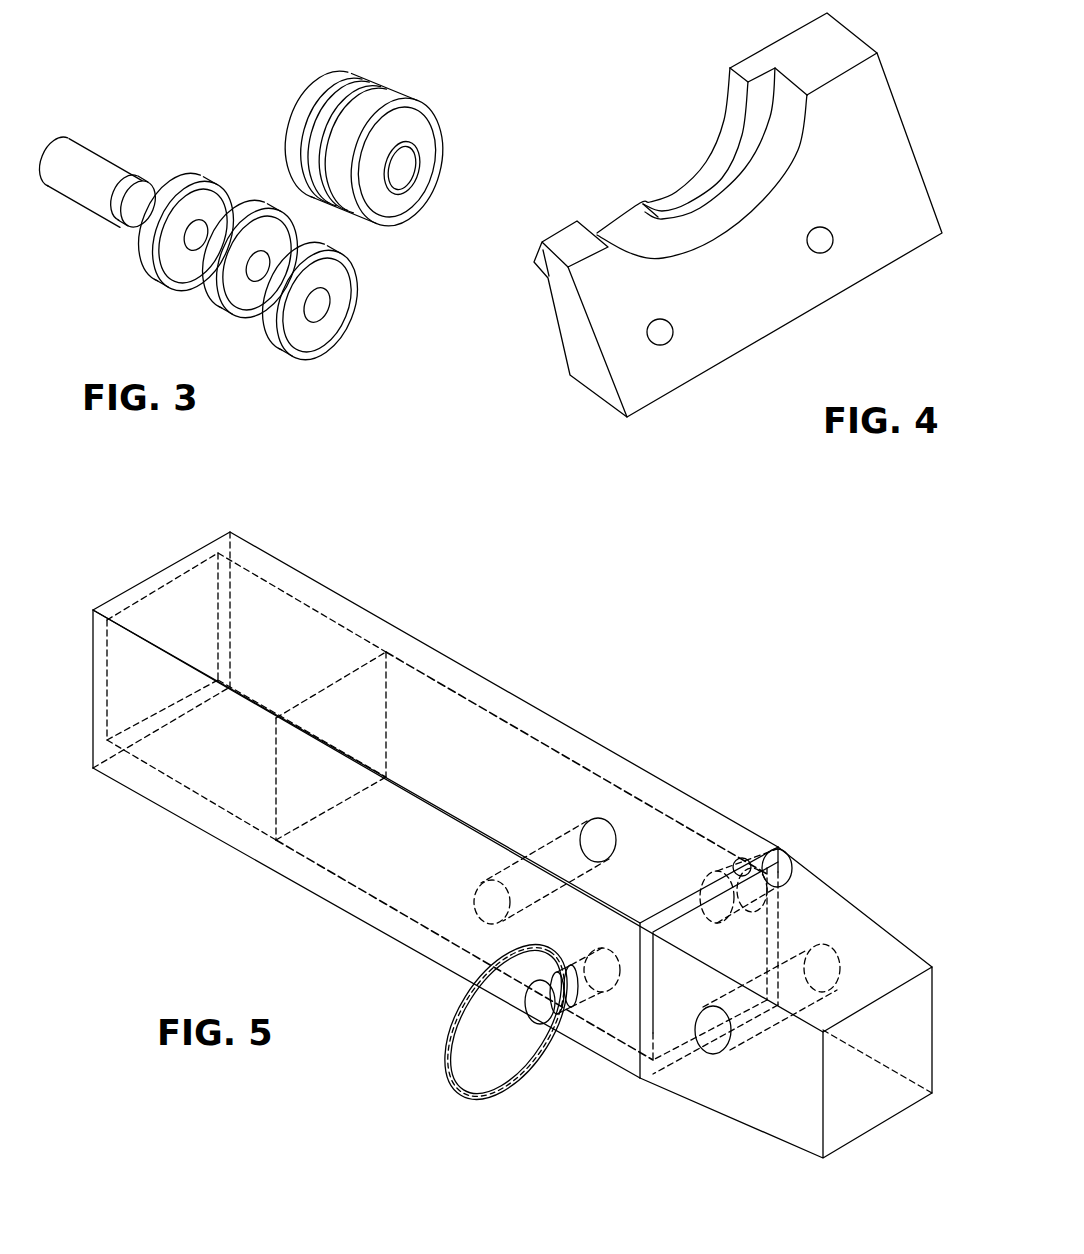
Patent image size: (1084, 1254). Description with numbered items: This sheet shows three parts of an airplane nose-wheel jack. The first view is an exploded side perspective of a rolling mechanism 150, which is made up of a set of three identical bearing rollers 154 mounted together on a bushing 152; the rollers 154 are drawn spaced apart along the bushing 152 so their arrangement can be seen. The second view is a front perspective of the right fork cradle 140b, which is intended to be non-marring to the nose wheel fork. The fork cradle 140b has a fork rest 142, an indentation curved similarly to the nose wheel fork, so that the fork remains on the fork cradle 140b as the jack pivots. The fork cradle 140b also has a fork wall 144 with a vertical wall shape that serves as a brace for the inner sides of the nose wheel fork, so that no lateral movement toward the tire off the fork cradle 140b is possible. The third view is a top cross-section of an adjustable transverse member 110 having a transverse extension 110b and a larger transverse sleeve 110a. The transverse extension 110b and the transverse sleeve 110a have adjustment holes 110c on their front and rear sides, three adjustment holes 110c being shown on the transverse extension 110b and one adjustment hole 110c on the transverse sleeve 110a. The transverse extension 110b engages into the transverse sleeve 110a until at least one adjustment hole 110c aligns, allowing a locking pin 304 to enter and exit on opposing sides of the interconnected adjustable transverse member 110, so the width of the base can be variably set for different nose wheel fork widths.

In FIG. 3, the rolling mechanism 150 is at (277, 95).
In FIG. 3, the bushing 152 is at (102, 175).
In FIG. 3, the bearing rollers 154 is at (338, 277).
In FIG. 4, the right fork cradle 140b is at (901, 287).
In FIG. 4, the fork rest 142 is at (784, 122).
In FIG. 4, the fork wall 144 is at (763, 97).
In FIG. 5, the adjustable transverse member 110 is at (553, 678).
In FIG. 5, the transverse sleeve 110a is at (130, 775).
In FIG. 5, the transverse extension 110b is at (890, 955).
In FIG. 5, the adjustment holes 110c is at (712, 1046).
In FIG. 5, the locking pin 304 is at (447, 1067).